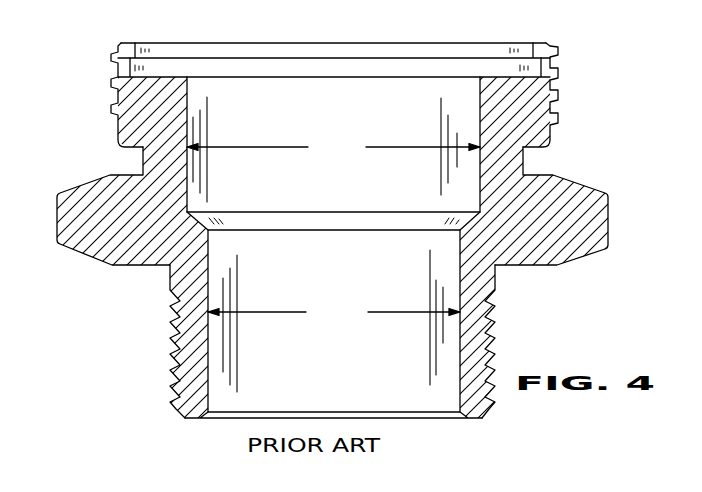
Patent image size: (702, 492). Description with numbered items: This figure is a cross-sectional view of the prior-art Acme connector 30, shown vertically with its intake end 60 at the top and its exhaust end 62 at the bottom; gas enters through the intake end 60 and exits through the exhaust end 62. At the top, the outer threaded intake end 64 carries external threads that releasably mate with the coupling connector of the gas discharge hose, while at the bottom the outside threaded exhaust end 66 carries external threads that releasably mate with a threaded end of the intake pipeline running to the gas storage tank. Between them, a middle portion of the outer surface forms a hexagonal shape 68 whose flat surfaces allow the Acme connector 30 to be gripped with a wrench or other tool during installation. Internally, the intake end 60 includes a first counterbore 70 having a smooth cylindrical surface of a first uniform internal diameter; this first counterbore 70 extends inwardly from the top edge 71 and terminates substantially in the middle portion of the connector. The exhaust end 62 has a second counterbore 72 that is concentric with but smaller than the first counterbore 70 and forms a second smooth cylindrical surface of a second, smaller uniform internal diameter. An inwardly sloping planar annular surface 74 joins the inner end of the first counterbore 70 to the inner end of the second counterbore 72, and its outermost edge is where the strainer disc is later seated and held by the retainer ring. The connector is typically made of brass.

The Acme connector 30 is at (601, 142).
The intake end 60 is at (134, 43).
The exhaust end 62 is at (192, 422).
The outer threaded intake end 64 is at (559, 72).
The outside threaded exhaust end 66 is at (488, 313).
The hexagonal shape 68 is at (608, 200).
The first counterbore 70 is at (250, 90).
The top edge 71 is at (479, 75).
The second counterbore 72 is at (423, 398).
The inwardly sloping planar annular surface 74 is at (468, 212).